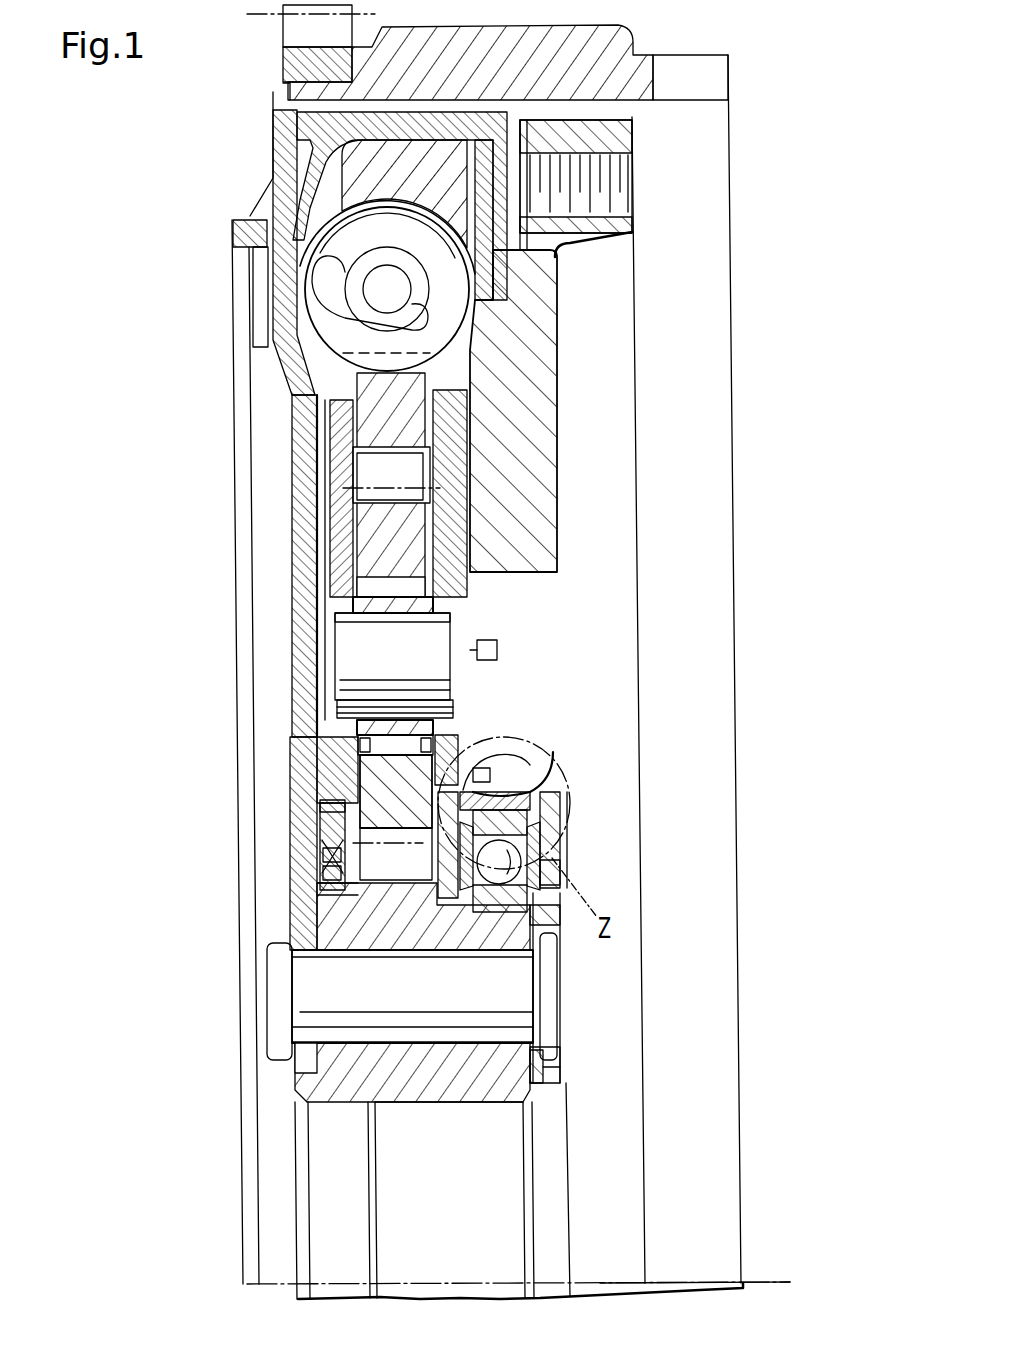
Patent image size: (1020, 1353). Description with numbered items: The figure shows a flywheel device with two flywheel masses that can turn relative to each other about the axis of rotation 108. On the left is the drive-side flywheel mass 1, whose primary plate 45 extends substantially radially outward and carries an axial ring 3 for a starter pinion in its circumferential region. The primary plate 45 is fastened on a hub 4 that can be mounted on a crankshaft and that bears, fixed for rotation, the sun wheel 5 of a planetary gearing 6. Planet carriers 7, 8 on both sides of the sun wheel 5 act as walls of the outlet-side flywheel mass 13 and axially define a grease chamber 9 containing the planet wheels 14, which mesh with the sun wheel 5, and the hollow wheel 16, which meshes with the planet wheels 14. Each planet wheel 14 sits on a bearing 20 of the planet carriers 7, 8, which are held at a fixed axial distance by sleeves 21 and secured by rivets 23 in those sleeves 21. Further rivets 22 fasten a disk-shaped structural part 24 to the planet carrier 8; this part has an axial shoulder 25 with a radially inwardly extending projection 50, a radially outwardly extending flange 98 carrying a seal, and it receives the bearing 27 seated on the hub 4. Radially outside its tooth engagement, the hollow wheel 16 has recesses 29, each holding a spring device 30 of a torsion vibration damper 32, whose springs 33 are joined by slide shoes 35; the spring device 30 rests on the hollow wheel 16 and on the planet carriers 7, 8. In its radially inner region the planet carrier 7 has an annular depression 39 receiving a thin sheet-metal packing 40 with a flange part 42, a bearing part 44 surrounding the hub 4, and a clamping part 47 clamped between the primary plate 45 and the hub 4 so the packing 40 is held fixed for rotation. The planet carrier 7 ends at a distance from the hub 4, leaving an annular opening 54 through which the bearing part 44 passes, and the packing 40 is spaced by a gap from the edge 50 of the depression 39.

The drive-side flywheel mass 1 is at (300, 558).
The axial ring 3 is at (623, 43).
The hub 4 is at (340, 1072).
The sun wheel 5 is at (388, 885).
The planetary gearing 6 is at (423, 800).
The planet carrier 7 is at (345, 770).
The planet carrier 8 is at (450, 542).
The grease chamber 9 is at (450, 792).
The outlet-side flywheel mass 13 is at (565, 400).
The planet wheels 14 is at (350, 520).
The hollow wheel 16 is at (360, 398).
The bearings 20 is at (333, 740).
The sleeves 21 is at (365, 620).
The rivets 22 is at (490, 678).
The rivets 23 is at (445, 628).
The disk-shaped structural part 24 is at (478, 745).
The axial shoulder 25 is at (540, 800).
The bearing 27 is at (552, 840).
The recesses 29 is at (455, 318).
The spring device 30 is at (450, 300).
The torsion vibration damper 32 is at (450, 280).
The springs 33 is at (430, 333).
The slide shoes 35 is at (343, 162).
The annular depression 39 is at (333, 850).
The packing 40 is at (340, 878).
The flange part 42 is at (345, 858).
The bearing part 44 is at (317, 900).
The primary plate 45 is at (302, 662).
The clamping part 47 is at (305, 955).
The radially inwardly extending projection 50 is at (548, 872).
The annular opening 54 is at (333, 885).
The radially outwardly extending flange 98 is at (487, 655).
The axis of rotation 108 is at (772, 1280).